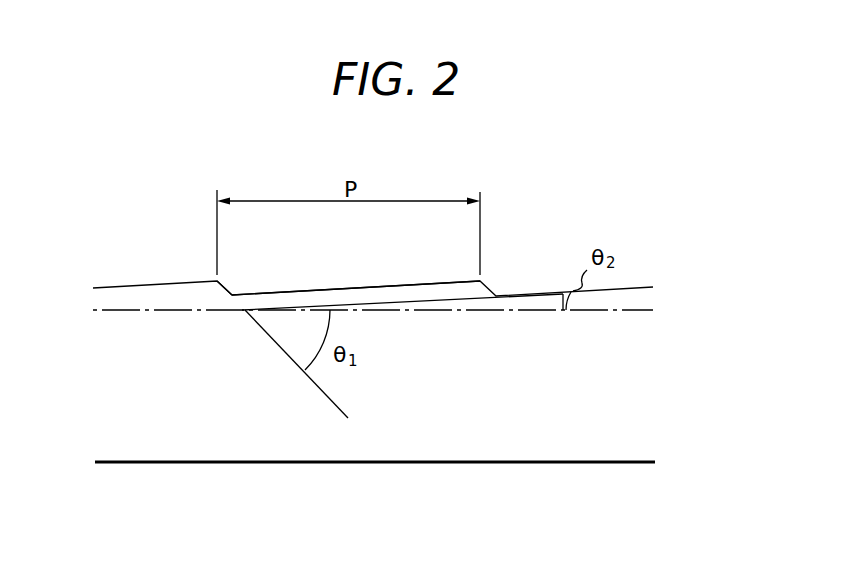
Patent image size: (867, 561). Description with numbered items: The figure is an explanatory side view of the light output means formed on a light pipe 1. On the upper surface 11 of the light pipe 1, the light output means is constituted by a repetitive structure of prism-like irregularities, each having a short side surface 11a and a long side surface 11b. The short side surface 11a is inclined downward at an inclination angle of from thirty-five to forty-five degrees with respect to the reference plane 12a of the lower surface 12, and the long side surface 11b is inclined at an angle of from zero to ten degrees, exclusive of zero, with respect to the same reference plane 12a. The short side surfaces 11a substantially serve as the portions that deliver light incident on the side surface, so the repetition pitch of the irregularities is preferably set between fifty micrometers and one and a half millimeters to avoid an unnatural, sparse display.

The light pipe 1 is at (607, 433).
The upper surface of the light pipe 11 is at (506, 270).
The short side surface 11a is at (231, 286).
The long side surface 11b is at (350, 287).
The lower surface 12 is at (483, 465).
The reference plane of the lower surface 12a is at (447, 312).